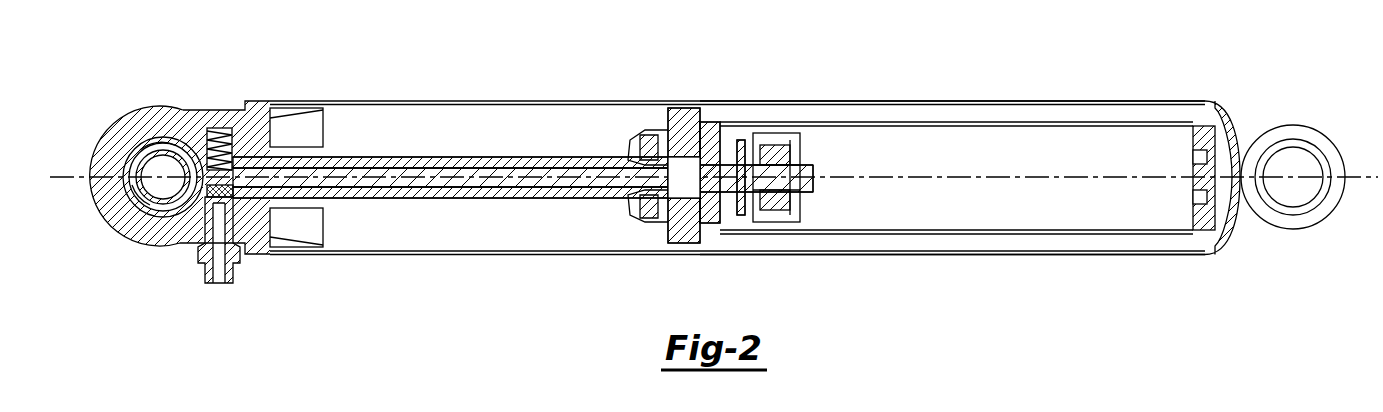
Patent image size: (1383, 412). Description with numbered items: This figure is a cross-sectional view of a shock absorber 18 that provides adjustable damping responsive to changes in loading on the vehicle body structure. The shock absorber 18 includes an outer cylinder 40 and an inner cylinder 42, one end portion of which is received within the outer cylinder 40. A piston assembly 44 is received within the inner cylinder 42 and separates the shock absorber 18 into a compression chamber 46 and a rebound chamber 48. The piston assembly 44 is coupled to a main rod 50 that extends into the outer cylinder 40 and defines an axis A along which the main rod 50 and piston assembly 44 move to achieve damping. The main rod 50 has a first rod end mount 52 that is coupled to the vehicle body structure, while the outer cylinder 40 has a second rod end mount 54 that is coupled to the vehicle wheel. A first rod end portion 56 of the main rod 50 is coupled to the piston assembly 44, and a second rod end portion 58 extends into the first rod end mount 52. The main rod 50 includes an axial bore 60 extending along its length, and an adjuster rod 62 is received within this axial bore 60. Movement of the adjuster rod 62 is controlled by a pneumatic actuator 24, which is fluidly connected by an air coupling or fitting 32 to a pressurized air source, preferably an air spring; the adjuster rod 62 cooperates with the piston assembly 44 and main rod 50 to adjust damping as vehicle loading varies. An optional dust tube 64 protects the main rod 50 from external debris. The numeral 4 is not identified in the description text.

The piston rod 4 is at (333, 158).
The shock absorber 18 is at (1087, 96).
The pneumatic actuator 24 is at (200, 210).
The air coupling or fitting 32 is at (236, 260).
The outer cylinder 40 is at (922, 100).
The inner cylinder 42 is at (1133, 238).
The piston assembly 44 is at (815, 150).
The compression chamber 46 is at (990, 226).
The rebound chamber 48 is at (738, 133).
The main rod 50 is at (506, 200).
The first rod end mount 52 is at (122, 232).
The second rod end mount 54 is at (1287, 224).
The first rod end portion 56 is at (680, 241).
The second rod end portion 58 is at (272, 158).
The axial bore 60 is at (572, 167).
The adjuster rod 62 is at (478, 176).
The dust tube 64 is at (445, 100).
The axis A is at (1358, 174).